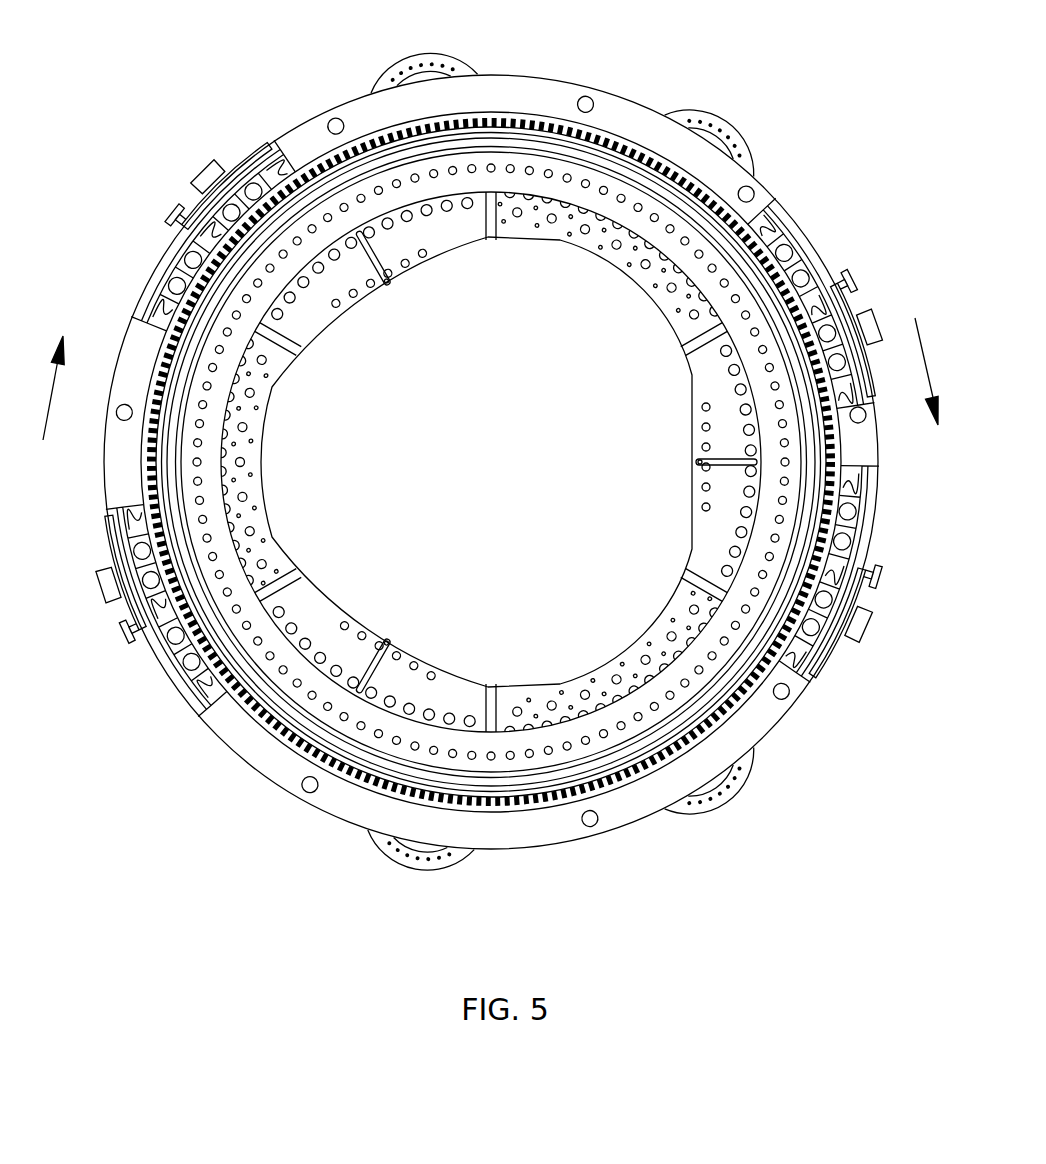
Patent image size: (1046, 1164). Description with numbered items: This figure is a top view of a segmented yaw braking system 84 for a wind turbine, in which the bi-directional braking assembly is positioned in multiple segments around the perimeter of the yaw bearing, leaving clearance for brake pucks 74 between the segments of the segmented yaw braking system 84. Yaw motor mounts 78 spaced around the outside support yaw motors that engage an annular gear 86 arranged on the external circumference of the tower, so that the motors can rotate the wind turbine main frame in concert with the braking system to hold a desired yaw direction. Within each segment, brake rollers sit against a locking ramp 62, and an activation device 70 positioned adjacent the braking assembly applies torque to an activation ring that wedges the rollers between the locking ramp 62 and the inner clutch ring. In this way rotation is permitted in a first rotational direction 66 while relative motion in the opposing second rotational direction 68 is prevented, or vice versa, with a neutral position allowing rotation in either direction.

The locking ramp 62 is at (775, 212).
The first rotational direction 66 is at (940, 357).
The second rotational direction 68 is at (50, 398).
The activation device 70 is at (872, 322).
The brake pucks 74 is at (336, 118).
The yaw motor mounts 78 is at (425, 52).
The segmented yaw braking system 84 is at (800, 218).
The annular gear 86 is at (521, 122).